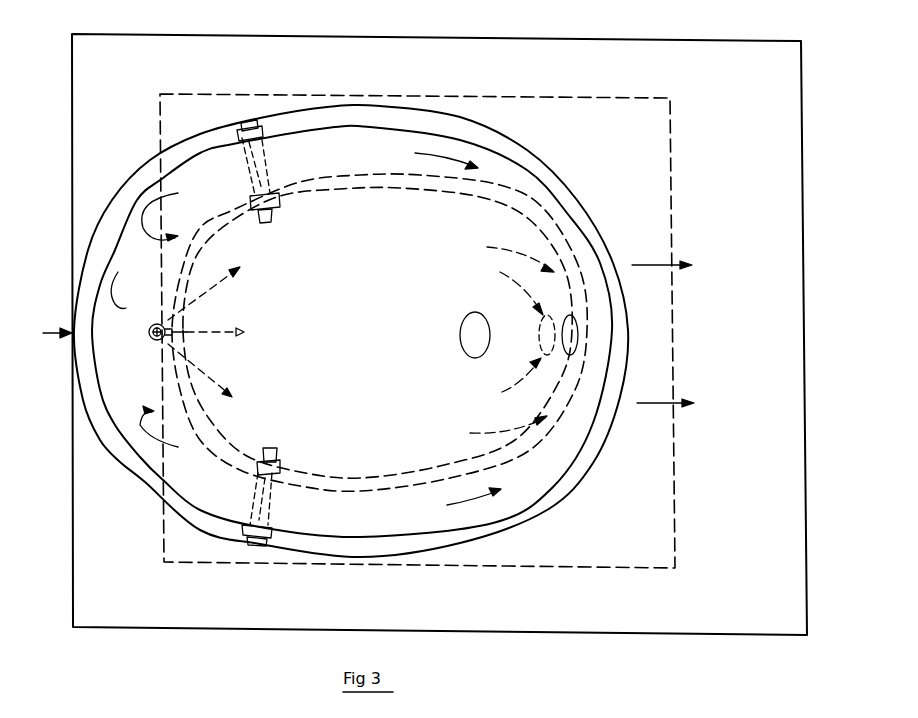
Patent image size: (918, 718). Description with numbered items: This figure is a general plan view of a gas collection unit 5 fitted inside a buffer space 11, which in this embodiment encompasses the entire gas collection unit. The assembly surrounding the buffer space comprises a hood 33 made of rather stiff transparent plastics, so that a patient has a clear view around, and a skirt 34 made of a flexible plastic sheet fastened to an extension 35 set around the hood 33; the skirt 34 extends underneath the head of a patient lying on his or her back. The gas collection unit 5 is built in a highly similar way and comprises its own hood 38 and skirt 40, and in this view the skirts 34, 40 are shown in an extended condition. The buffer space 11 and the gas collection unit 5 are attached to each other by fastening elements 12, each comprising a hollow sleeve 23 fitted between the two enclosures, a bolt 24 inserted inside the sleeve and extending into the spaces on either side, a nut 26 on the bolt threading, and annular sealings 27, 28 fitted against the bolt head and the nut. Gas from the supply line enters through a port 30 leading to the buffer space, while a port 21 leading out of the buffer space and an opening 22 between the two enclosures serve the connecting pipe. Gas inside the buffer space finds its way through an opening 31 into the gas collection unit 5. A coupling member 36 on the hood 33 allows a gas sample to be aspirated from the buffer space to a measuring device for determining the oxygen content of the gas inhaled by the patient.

The gas collection unit 5 is at (435, 210).
The buffer space 11 is at (42, 332).
The fastening element 12 is at (275, 141).
The port 21 is at (571, 337).
The opening 22 is at (545, 332).
The hollow sleeve 23 is at (253, 177).
The bolt 24 is at (248, 122).
The nut 26 is at (272, 213).
The annular sealing 27 is at (240, 124).
The annular sealing 28 is at (280, 202).
The port 30 is at (470, 343).
The opening 31 is at (186, 331).
The hood 33 is at (138, 457).
The skirt 34 is at (808, 288).
The extension 35 is at (120, 193).
The coupling member 36 is at (153, 343).
The hood 38 is at (379, 332).
The skirt 40 is at (668, 158).